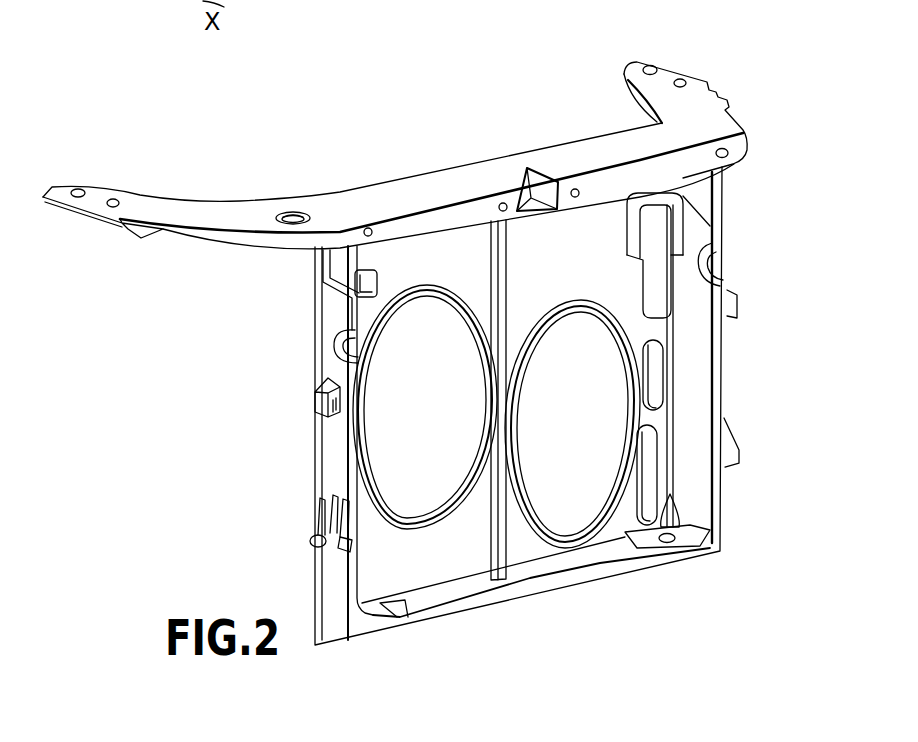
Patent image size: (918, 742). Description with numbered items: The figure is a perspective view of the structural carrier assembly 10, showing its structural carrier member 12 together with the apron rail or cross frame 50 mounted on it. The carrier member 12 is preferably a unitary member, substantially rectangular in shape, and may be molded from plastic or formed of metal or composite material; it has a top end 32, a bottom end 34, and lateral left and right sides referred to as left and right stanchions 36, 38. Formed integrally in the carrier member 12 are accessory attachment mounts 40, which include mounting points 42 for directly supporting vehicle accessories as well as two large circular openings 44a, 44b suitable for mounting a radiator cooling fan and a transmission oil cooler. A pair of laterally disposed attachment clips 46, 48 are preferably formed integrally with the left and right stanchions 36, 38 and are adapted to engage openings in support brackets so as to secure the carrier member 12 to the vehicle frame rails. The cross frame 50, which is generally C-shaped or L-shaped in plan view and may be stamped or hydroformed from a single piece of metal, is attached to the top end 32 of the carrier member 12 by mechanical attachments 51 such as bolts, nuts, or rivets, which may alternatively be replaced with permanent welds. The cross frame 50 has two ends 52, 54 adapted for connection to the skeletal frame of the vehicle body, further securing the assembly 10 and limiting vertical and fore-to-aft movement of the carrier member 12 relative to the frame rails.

The structural carrier assembly 10 is at (180, 155).
The structural carrier member 12 is at (453, 567).
The top end 32 is at (593, 218).
The bottom end 34 is at (613, 560).
The left stanchion 36 is at (728, 358).
The right stanchion 38 is at (330, 462).
The accessory attachment mounts 40 is at (390, 367).
The mounting points 42 is at (340, 333).
The circular opening 44a is at (437, 415).
The circular opening 44b is at (586, 422).
The attachment clip 46 is at (748, 450).
The attachment clip 48 is at (292, 538).
The cross frame 50 is at (409, 186).
The mechanical attachments 51 is at (373, 238).
The end of cross frame 52 is at (633, 60).
The end of cross frame 54 is at (97, 183).